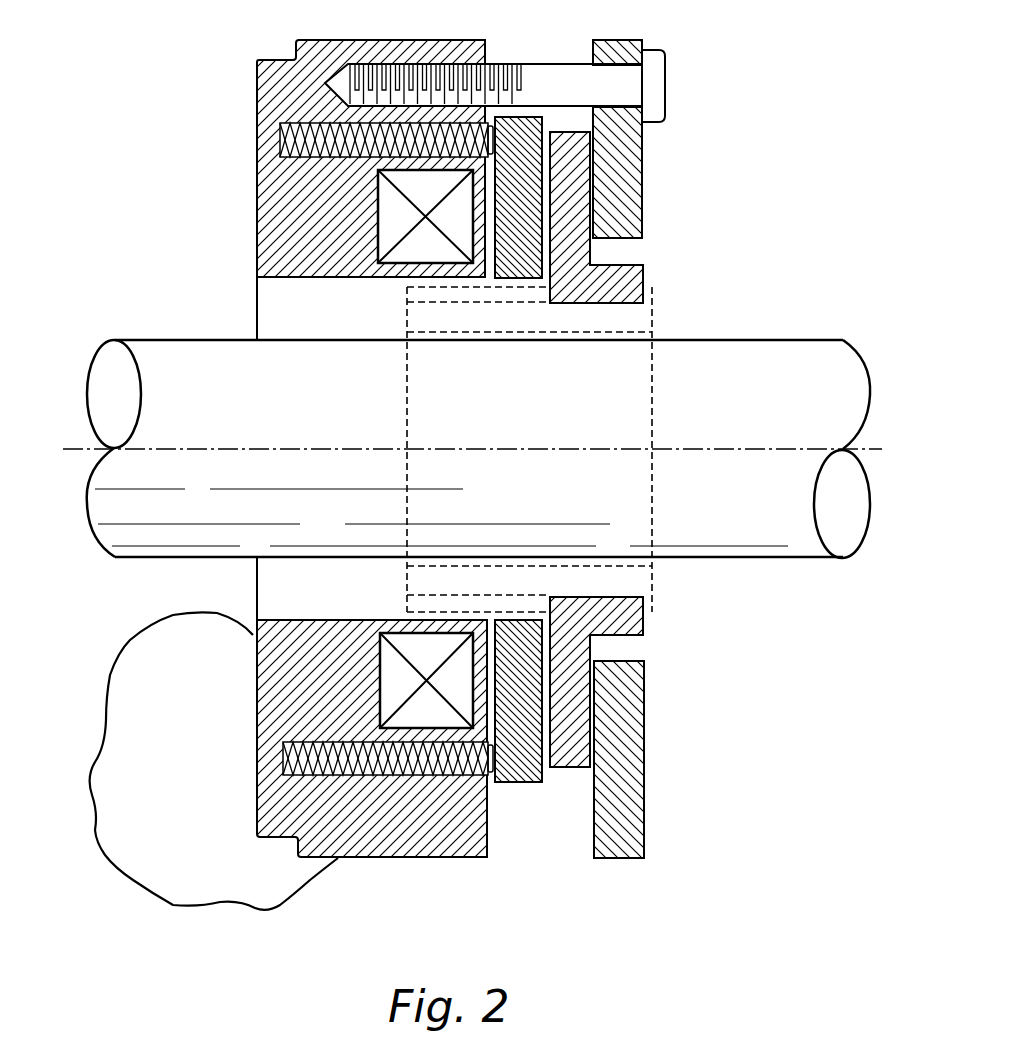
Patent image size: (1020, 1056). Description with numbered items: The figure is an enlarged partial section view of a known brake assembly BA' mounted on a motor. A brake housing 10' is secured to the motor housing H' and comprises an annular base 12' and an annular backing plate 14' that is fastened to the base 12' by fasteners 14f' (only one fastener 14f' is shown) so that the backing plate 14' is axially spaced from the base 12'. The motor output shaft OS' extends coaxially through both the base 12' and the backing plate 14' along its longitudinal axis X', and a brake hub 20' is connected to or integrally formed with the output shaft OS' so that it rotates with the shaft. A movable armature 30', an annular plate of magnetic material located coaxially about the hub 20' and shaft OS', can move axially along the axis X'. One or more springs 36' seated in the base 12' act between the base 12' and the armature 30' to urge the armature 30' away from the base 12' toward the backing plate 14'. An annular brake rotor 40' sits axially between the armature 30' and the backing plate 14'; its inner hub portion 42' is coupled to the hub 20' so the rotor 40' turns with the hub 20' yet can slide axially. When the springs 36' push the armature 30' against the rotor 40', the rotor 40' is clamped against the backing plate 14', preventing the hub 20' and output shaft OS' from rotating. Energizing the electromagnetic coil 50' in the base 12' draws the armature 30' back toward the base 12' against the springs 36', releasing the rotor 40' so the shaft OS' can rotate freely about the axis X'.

The brake housing 10' is at (311, 190).
The base 12' is at (386, 746).
The backing plate 14' is at (670, 449).
The fastener 14f' is at (545, 80).
The brake hub 20' is at (588, 448).
The armature 30' is at (539, 495).
The spring 36' is at (328, 516).
The brake rotor 40' is at (631, 449).
The hub portion 42' is at (663, 269).
The electromagnetic coil 50' is at (270, 449).
The brake assembly BA' is at (775, 139).
The motor housing H' is at (196, 761).
The motor output shaft OS' is at (486, 420).
The longitudinal axis X' is at (475, 449).